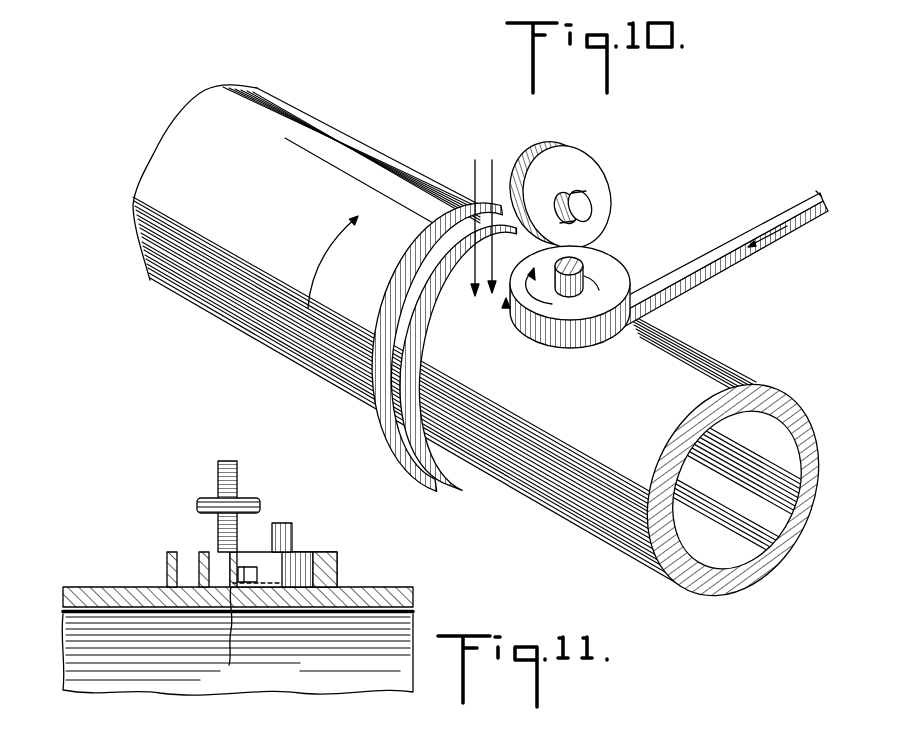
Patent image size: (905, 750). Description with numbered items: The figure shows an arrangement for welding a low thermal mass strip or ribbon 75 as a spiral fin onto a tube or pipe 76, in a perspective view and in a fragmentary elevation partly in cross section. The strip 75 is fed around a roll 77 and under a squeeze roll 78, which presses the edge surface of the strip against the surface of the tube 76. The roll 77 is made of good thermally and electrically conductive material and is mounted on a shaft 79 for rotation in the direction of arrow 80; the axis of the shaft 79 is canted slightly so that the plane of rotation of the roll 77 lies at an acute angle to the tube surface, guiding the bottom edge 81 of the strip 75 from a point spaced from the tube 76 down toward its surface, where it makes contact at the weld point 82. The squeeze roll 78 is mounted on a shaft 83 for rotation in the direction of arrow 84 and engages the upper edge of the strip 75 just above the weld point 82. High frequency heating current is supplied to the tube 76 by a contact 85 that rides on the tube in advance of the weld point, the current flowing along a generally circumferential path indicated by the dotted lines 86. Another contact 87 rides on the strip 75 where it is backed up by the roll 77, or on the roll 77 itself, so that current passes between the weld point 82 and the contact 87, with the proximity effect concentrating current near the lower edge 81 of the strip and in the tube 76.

In FIG. 10, the strip 75 is at (697, 258).
In FIG. 11, the strip 75 is at (332, 553).
In FIG. 10, the tube 76 is at (636, 396).
In FIG. 11, the tube 76 is at (100, 586).
In FIG. 10, the roll 77 is at (601, 255).
In FIG. 11, the roll 77 is at (338, 572).
In FIG. 10, the squeeze roll 78 is at (594, 168).
In FIG. 11, the squeeze roll 78 is at (242, 479).
In FIG. 10, the shaft 79 is at (584, 280).
In FIG. 11, the shaft 79 is at (291, 536).
In FIG. 10, the arrow 80 is at (562, 295).
In FIG. 10, the bottom edge 81 is at (688, 293).
In FIG. 11, the bottom edge 81 is at (345, 587).
In FIG. 11, the weld point 82 is at (236, 638).
In FIG. 10, the shaft 83 is at (590, 208).
In FIG. 11, the shaft 83 is at (205, 494).
In FIG. 10, the arrow 84 is at (537, 221).
In FIG. 10, the contact 85 is at (475, 296).
In FIG. 10, the dotted lines 86 is at (491, 300).
In FIG. 10, the contact 87 is at (506, 300).
In FIG. 11, the contact 87 is at (246, 566).